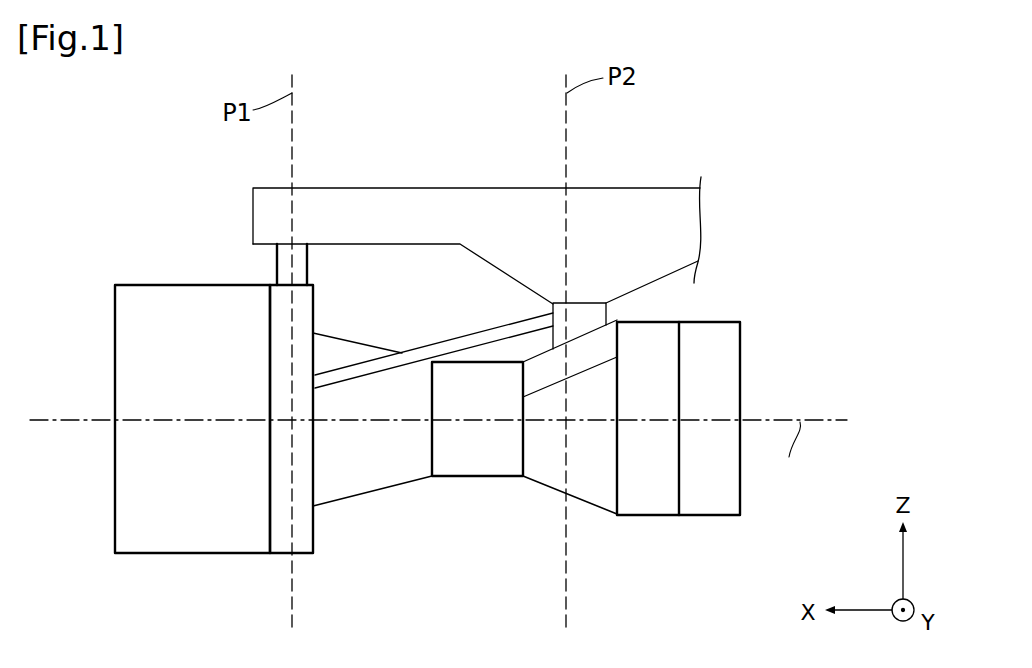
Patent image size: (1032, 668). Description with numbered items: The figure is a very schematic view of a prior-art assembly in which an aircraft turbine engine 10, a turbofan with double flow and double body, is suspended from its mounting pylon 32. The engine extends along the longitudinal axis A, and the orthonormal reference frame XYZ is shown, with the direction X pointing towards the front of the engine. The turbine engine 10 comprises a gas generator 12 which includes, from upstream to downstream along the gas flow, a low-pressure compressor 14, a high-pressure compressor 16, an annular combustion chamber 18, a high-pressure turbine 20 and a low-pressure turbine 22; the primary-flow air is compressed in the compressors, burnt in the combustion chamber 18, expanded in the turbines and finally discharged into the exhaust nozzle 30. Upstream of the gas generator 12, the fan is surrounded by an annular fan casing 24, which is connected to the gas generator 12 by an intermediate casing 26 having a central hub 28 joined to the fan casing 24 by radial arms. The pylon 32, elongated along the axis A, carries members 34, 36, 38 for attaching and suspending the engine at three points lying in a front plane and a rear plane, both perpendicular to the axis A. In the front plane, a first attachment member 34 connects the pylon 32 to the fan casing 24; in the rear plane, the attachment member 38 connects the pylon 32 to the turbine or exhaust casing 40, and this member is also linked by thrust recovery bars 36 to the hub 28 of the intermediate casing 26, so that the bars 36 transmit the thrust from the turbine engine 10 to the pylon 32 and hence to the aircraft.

The turbine engine 10 is at (808, 284).
The gas generator 12 is at (465, 474).
The low-pressure compressor 14 is at (322, 488).
The high-pressure compressor 16 is at (402, 400).
The annular combustion chamber 18 is at (502, 465).
The high-pressure turbine 20 is at (555, 470).
The low-pressure turbine 22 is at (603, 482).
The fan casing 24 is at (203, 543).
The intermediate casing 26 is at (281, 560).
The central hub 28 is at (315, 350).
The exhaust nozzle 30 is at (724, 380).
The pylon 32 is at (668, 185).
The first attachment member 34 is at (298, 257).
The thrust recovery bars 36 is at (342, 383).
The attachment member 38 is at (582, 322).
The exhaust casing 40 is at (582, 360).